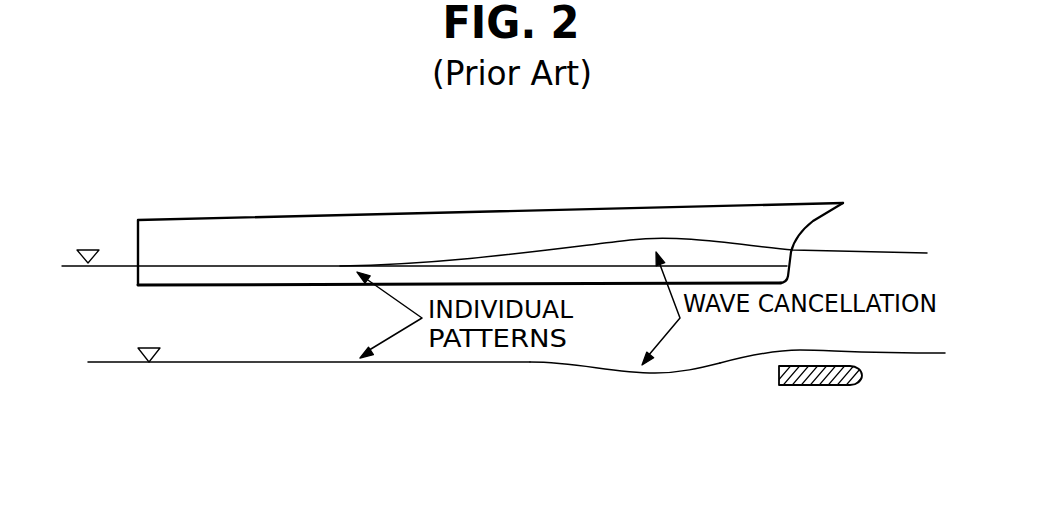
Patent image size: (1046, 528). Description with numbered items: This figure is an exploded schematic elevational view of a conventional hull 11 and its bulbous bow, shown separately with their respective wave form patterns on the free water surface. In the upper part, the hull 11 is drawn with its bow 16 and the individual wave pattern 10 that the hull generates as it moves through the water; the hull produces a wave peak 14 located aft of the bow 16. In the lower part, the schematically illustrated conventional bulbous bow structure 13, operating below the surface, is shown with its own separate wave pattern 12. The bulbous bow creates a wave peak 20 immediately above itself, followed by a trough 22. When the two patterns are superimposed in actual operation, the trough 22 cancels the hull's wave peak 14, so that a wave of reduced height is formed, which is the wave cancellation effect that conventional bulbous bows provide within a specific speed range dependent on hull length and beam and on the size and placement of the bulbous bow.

The wave pattern 10 is at (107, 265).
The hull waterline 11 is at (587, 228).
The wave peak 14 is at (643, 240).
The bow 16 is at (813, 222).
The wave pattern 12 is at (202, 362).
The wave peak 20 is at (810, 350).
The trough 22 is at (638, 372).
The bulbous bow structure 13 is at (863, 372).